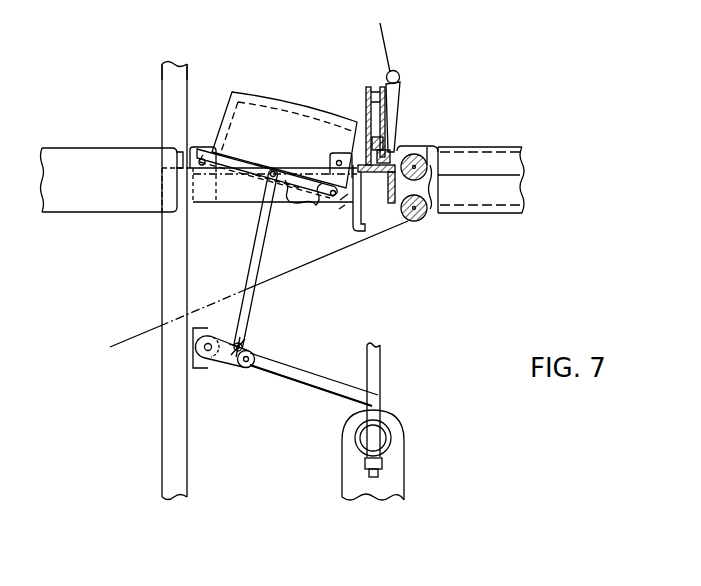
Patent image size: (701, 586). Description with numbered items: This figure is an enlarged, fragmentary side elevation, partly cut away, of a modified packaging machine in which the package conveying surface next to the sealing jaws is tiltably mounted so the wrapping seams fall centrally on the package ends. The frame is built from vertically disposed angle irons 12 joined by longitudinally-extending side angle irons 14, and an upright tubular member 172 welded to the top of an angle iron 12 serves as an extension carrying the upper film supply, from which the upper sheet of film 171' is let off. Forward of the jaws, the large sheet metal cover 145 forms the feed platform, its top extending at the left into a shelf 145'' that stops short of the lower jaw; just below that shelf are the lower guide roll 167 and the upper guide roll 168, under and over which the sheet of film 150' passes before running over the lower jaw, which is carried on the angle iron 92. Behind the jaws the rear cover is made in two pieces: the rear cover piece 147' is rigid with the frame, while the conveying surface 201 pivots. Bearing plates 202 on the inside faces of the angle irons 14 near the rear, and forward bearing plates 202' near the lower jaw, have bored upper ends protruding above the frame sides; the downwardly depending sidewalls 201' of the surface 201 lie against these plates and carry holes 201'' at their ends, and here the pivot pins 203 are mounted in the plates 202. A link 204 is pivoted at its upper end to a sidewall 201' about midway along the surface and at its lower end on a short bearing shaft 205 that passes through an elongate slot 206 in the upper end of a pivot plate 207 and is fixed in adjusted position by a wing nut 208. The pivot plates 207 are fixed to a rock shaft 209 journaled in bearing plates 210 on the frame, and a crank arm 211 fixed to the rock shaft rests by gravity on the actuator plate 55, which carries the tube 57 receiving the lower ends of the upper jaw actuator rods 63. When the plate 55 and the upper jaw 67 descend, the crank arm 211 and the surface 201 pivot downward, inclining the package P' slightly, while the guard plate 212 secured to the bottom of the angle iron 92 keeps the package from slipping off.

The vertical angle iron 12 is at (161, 262).
The upright tubular member 172 is at (162, 62).
The rear cover piece 147' is at (114, 159).
The bearing plate 202 is at (211, 188).
The pivot pin 203 is at (203, 156).
The side angle iron 14 is at (318, 168).
The package P' is at (284, 127).
The conveying surface 201 is at (267, 162).
The sidewall 201' is at (281, 221).
The hole 201'' is at (311, 214).
The forward bearing plate 202' is at (330, 150).
The guard plate 212 is at (361, 213).
The link 204 is at (254, 256).
The sheet of film 150' is at (259, 284).
The pivot plate 207 is at (230, 361).
The rock shaft 209 is at (204, 347).
The bearing plate 210 is at (194, 360).
The bearing shaft 205 is at (246, 338).
The wing nut 208 is at (248, 345).
The elongate slot 206 is at (252, 347).
The crank arm 211 is at (318, 375).
The upper jaw actuator rod 63 is at (381, 357).
The actuator plate 55 is at (368, 455).
The tube 57 is at (355, 437).
The angle iron 92 is at (388, 194).
The upper jaw 67 is at (368, 77).
The upper sheet of film 171' is at (415, 93).
The shelf 145'' is at (424, 128).
The sheet metal cover 145 is at (477, 166).
The upper guide roll 168 is at (417, 155).
The lower guide roll 167 is at (421, 216).